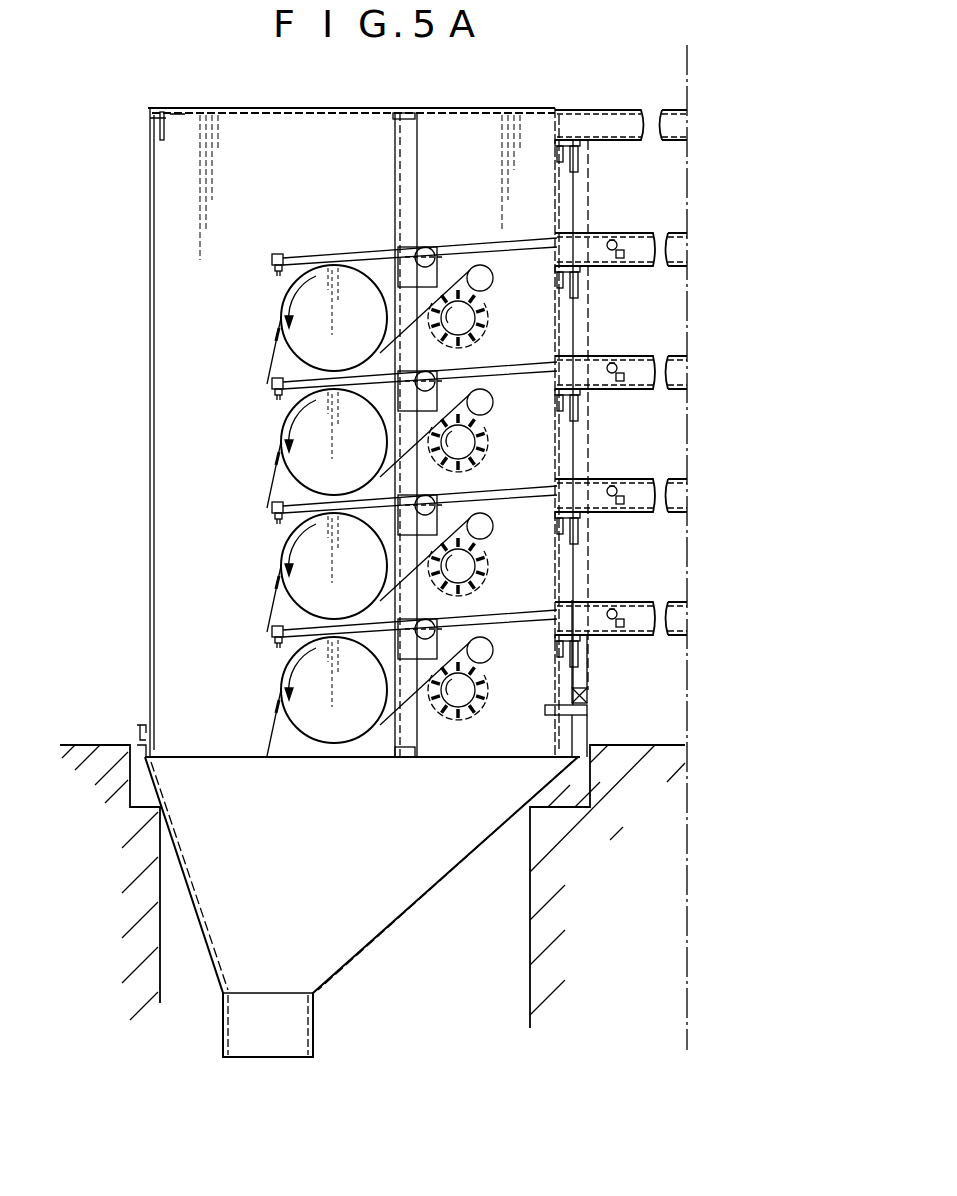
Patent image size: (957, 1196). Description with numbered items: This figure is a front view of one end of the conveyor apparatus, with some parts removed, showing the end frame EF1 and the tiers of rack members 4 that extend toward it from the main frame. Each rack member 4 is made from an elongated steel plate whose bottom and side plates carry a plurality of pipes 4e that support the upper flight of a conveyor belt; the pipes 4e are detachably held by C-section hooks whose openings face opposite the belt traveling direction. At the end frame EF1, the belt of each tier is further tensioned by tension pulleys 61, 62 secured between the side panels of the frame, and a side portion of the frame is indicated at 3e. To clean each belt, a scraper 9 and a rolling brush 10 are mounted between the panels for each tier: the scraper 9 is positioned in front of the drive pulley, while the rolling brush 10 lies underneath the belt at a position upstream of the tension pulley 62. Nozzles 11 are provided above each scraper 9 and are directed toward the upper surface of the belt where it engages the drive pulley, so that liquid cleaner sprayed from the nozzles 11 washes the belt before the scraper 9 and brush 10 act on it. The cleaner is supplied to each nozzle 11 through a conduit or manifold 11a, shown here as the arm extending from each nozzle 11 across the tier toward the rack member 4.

The side wall of electrostatic flocking chamber 3e is at (150, 523).
The rack member 4 is at (607, 128).
The pipe 4e is at (610, 258).
The scraper 9 is at (268, 360).
The rolling brush 10 is at (488, 322).
The nozzle 11 is at (271, 263).
The conduit or manifold 11a is at (320, 248).
The tension pulley 61 is at (432, 247).
The tension pulley 62 is at (492, 279).
The end frame EF1 is at (282, 104).